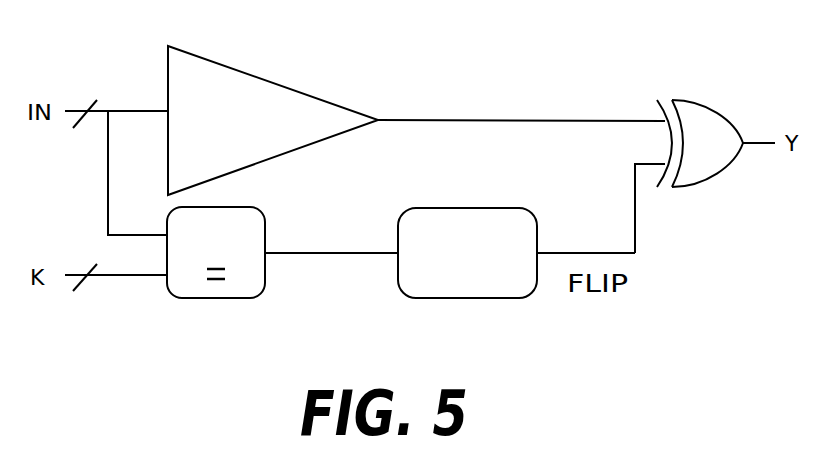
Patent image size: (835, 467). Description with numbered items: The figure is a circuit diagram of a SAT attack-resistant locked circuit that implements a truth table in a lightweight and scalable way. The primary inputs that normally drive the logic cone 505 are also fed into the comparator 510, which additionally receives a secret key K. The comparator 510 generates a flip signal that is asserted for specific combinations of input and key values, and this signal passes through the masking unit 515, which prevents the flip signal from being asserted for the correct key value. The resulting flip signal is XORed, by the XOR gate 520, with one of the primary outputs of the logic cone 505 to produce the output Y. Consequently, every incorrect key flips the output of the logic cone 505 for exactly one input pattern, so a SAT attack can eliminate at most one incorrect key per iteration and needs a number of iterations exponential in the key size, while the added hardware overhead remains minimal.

The logic cone 505 is at (302, 110).
The comparator 510 is at (188, 287).
The masking unit 515 is at (517, 287).
The XOR gate 520 is at (700, 122).